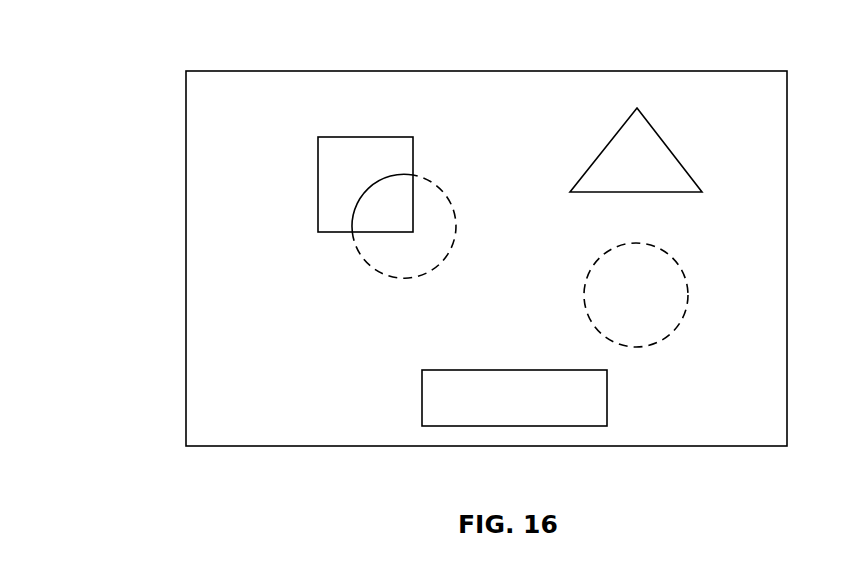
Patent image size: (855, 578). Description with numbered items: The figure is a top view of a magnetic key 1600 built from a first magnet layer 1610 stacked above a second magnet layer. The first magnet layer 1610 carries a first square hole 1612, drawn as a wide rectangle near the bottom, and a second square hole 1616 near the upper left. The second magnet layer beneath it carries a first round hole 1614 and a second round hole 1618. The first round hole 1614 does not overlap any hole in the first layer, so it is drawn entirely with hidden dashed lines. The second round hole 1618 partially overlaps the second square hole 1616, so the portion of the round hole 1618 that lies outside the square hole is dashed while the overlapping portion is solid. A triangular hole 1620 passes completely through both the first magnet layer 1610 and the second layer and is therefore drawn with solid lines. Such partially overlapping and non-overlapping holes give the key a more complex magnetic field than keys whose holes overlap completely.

The magnetic key 1600 is at (142, 38).
The first magnet layer 1610 is at (486, 258).
The first square hole 1612 is at (514, 398).
The first round hole 1614 is at (636, 295).
The second square hole 1616 is at (365, 184).
The second round hole 1618 is at (404, 226).
The triangular hole 1620 is at (636, 150).